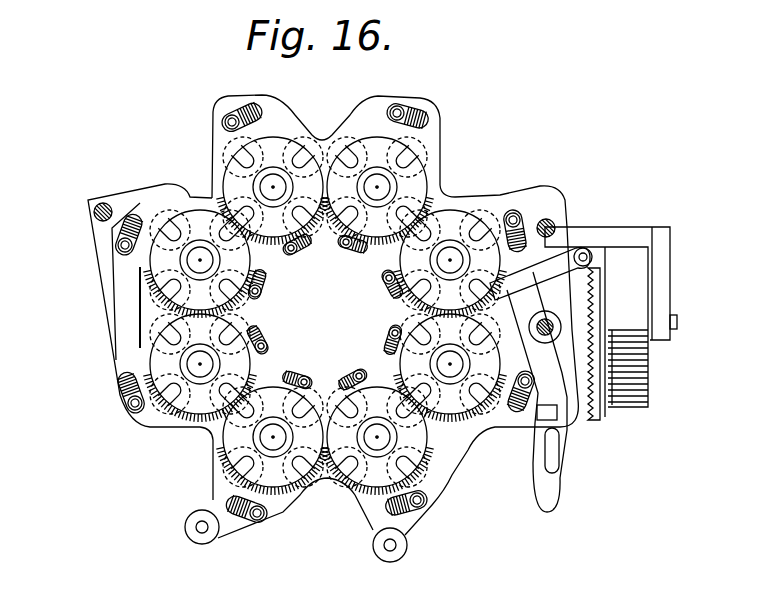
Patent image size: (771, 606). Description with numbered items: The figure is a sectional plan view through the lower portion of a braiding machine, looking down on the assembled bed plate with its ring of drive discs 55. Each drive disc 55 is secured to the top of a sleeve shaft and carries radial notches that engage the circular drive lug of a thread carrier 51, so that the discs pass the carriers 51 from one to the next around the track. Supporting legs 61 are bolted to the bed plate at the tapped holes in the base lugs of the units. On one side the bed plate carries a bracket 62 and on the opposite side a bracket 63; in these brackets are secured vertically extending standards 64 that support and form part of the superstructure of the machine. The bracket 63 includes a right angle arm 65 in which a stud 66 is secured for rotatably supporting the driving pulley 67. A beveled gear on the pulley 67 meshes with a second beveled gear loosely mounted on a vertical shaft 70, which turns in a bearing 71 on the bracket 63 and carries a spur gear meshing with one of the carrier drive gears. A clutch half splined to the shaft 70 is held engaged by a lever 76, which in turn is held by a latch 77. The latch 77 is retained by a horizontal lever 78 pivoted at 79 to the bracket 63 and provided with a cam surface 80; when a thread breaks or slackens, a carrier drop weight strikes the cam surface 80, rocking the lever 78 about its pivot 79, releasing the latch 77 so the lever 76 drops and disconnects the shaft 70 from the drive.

The carrier 51 is at (299, 321).
The drive disc 55 is at (420, 178).
The supporting legs 61 is at (222, 529).
The bracket 62 is at (97, 281).
The bracket 63 is at (568, 212).
The standards 64 is at (105, 200).
The right angle arm 65 is at (664, 266).
The stud 66 is at (678, 322).
The driving pulley 67 is at (632, 404).
The vertical shaft 70 is at (548, 320).
The bearing 71 is at (578, 344).
The lever 76 is at (558, 496).
The latch 77 is at (540, 421).
The horizontal lever 78 is at (560, 440).
The pivot 79 is at (588, 253).
The cam surface 80 is at (540, 273).